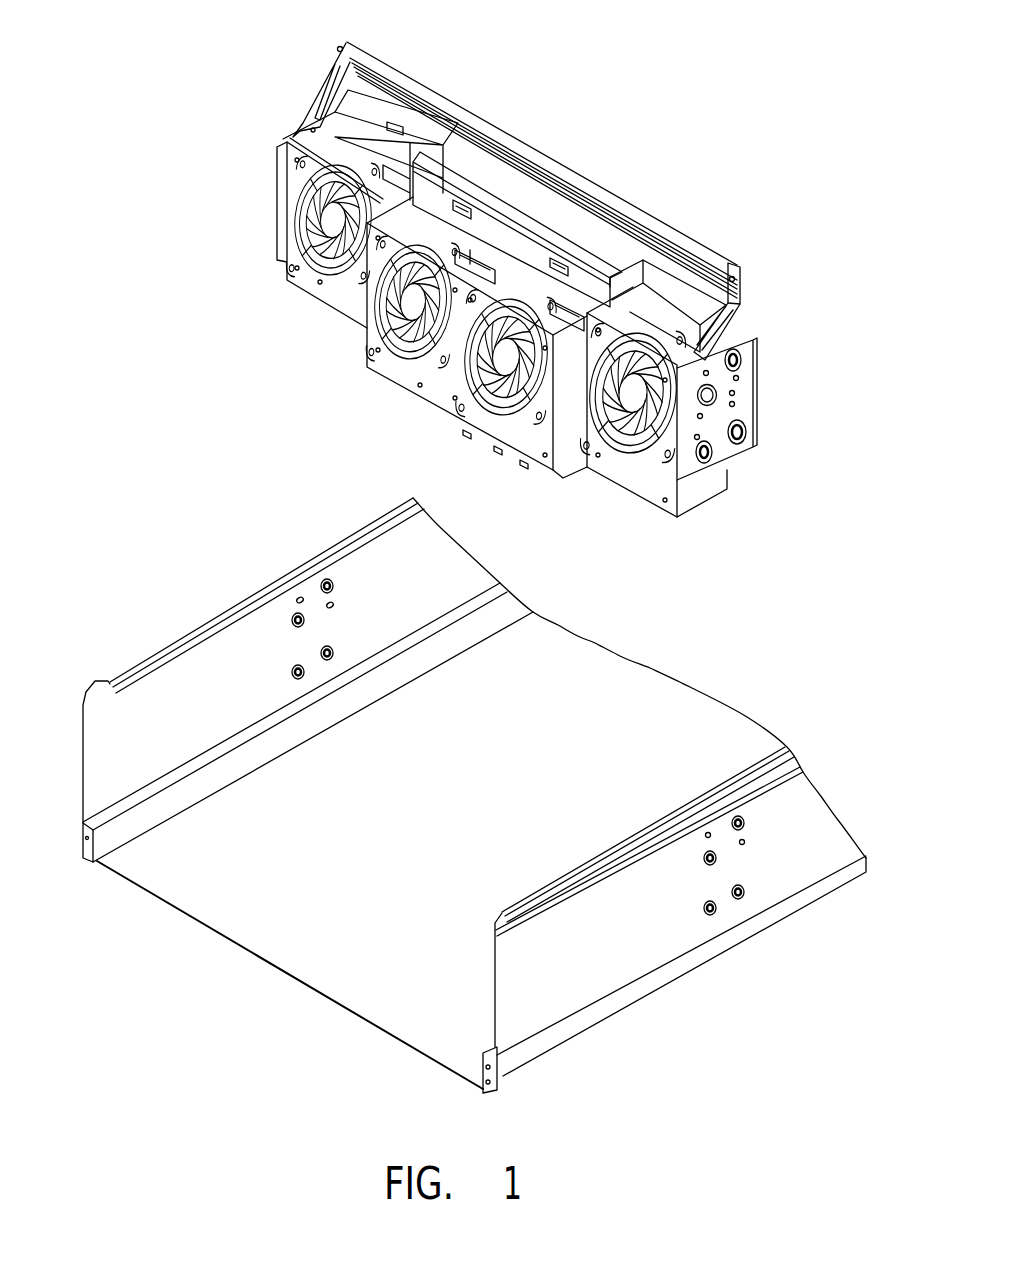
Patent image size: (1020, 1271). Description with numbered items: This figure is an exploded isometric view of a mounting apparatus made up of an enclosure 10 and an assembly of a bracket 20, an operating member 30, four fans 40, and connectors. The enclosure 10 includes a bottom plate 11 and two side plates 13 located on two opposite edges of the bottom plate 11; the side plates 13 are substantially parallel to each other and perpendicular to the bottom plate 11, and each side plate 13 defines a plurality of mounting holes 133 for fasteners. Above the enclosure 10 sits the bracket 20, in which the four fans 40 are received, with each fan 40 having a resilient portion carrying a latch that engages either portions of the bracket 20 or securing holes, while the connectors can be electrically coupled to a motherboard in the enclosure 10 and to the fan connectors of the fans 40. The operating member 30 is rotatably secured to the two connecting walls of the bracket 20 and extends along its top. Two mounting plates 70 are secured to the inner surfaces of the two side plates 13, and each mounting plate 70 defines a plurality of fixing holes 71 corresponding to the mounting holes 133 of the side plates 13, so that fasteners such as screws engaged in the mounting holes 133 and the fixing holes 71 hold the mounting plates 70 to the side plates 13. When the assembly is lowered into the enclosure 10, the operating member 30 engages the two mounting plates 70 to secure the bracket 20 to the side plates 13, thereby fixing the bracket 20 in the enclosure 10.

The enclosure 10 is at (474, 795).
The bottom plate 11 is at (229, 920).
The side plate 13 is at (308, 680).
The fixing holes 133 is at (298, 612).
The bracket 20 is at (681, 392).
The operating member 30 is at (508, 138).
The fan 40 is at (380, 343).
The mounting plate 70 is at (737, 407).
The fixing hole 71 is at (746, 436).